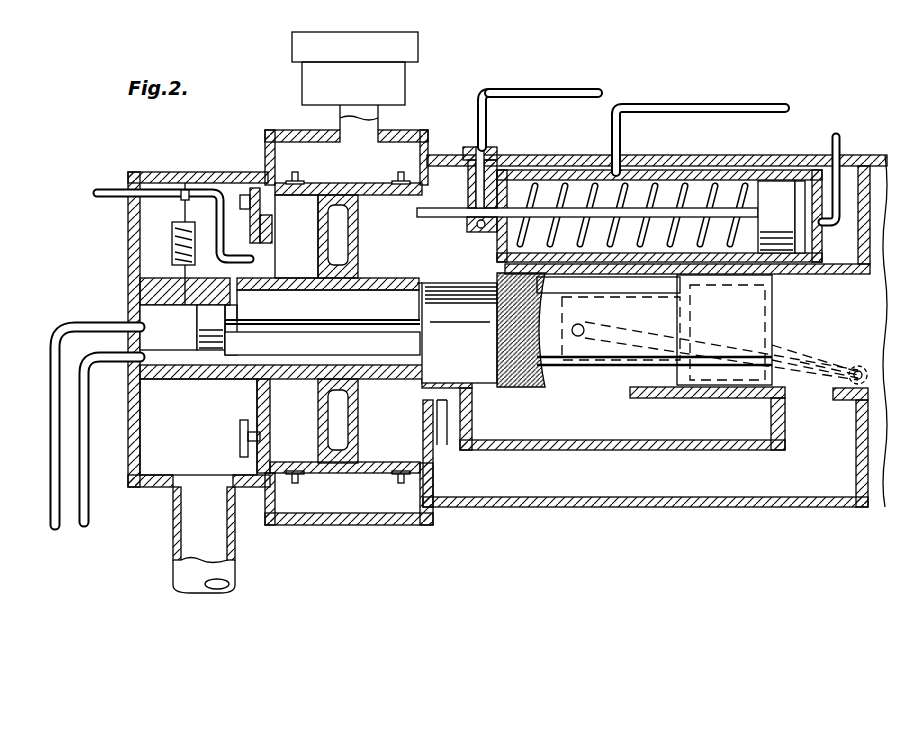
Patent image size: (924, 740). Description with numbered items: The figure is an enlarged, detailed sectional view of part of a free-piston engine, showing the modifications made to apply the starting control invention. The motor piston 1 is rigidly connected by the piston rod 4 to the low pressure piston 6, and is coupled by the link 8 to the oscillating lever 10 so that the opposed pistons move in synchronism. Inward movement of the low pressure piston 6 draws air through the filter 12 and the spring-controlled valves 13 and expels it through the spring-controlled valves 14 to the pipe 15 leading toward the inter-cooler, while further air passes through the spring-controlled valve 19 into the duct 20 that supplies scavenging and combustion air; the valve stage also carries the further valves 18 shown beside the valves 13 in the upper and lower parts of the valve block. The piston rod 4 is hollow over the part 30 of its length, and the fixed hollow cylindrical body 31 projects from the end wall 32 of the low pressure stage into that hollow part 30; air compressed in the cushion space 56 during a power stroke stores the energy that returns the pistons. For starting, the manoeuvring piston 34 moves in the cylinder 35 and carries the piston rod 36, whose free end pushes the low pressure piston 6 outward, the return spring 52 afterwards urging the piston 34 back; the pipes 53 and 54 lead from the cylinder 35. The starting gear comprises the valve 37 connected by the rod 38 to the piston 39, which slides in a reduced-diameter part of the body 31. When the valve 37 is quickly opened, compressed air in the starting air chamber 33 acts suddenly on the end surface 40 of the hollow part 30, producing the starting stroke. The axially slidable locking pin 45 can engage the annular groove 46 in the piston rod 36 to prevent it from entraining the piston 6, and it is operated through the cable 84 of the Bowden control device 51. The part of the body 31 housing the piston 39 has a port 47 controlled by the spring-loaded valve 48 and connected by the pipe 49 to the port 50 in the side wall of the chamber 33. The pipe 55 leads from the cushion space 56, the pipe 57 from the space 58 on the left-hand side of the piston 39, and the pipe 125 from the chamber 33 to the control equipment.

The free-piston 1 is at (744, 362).
The piston rod 4 is at (585, 350).
The low pressure piston 6 is at (318, 232).
The link 8 is at (826, 364).
The oscillating lever 10 is at (874, 370).
The filter 12 is at (318, 78).
The spring-controlled valves 13 is at (299, 183).
The spring-controlled valves 14 is at (245, 190).
The pipe 15 is at (178, 575).
The port 18 is at (402, 183).
The spring-controlled valve 19 is at (447, 442).
The duct 20 is at (655, 331).
The hollow part of piston rod 30 is at (386, 386).
The fixed hollow cylindrical body 31 is at (300, 378).
The end wall 32 is at (128, 300).
The starting air chamber 33 is at (399, 299).
The piston 34 is at (774, 190).
The cylinder 35 is at (701, 172).
The piston rod 36 is at (651, 215).
The valve 37 is at (420, 339).
The rod 38 is at (358, 330).
The piston 39 is at (215, 318).
The end surface 40 is at (497, 359).
The locking pin 45 is at (468, 189).
The annular groove 46 is at (468, 226).
The port 47 is at (168, 327).
The spring-loaded valve 48 is at (172, 260).
The pipe 49 is at (184, 220).
The port 50 is at (222, 294).
The Bowden control device 51 is at (537, 96).
The spring 52 is at (533, 193).
The pipe 53 is at (841, 153).
The pipe 54 is at (690, 115).
The pipe 55 is at (90, 512).
The cushion space 56 is at (459, 333).
The pipe 57 is at (55, 522).
The space 58 is at (178, 352).
The cable 84 is at (476, 148).
The pipe 125 is at (112, 190).